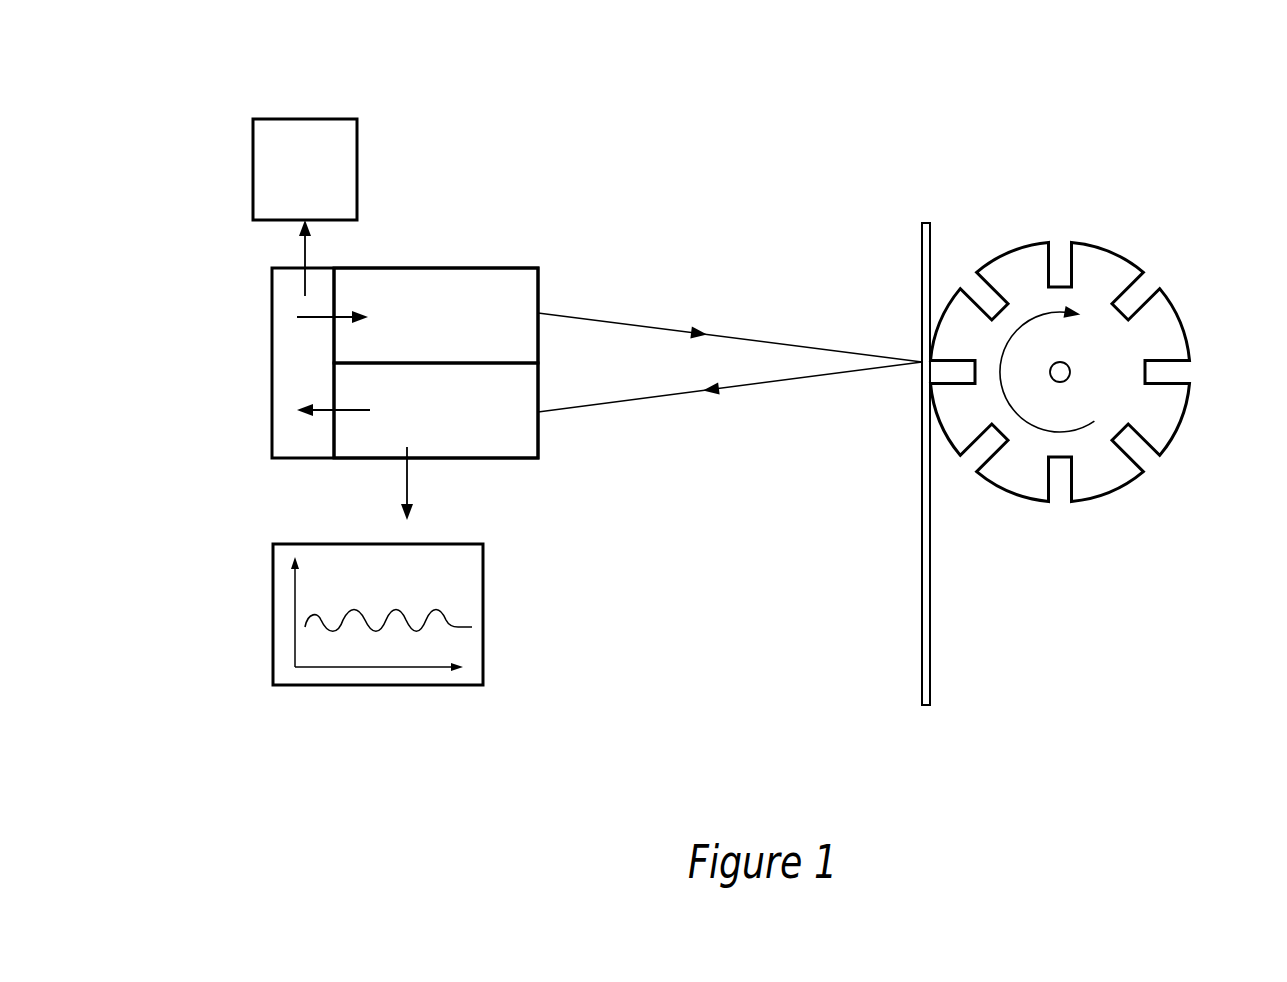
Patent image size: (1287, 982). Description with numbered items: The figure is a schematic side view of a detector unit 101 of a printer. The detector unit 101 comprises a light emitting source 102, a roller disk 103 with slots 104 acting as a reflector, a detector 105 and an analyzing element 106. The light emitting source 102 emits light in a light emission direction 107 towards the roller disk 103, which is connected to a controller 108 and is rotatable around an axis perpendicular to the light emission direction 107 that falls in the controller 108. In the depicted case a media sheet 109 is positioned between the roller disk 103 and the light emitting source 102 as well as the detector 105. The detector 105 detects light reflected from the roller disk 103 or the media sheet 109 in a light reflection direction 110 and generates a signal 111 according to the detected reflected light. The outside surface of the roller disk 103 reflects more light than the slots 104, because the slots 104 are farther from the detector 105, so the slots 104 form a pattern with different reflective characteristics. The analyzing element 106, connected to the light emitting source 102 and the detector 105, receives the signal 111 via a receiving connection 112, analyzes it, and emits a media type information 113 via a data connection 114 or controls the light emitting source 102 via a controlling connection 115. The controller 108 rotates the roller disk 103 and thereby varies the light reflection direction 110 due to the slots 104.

The detector unit 101 is at (549, 122).
The light emitting source 102 is at (488, 285).
The roller disk 103 is at (1160, 405).
The slots 104 is at (1153, 462).
The detector 105 is at (488, 430).
The analyzing element 106 is at (292, 441).
The light emission direction 107 is at (767, 340).
The controller 108 is at (1070, 372).
The media sheet 109 is at (930, 640).
The light reflection direction 110 is at (748, 385).
The signal 111 is at (483, 618).
The receiving connection 112 is at (348, 411).
The media type information 113 is at (357, 160).
The data connection 114 is at (305, 251).
The controlling connection 115 is at (368, 317).